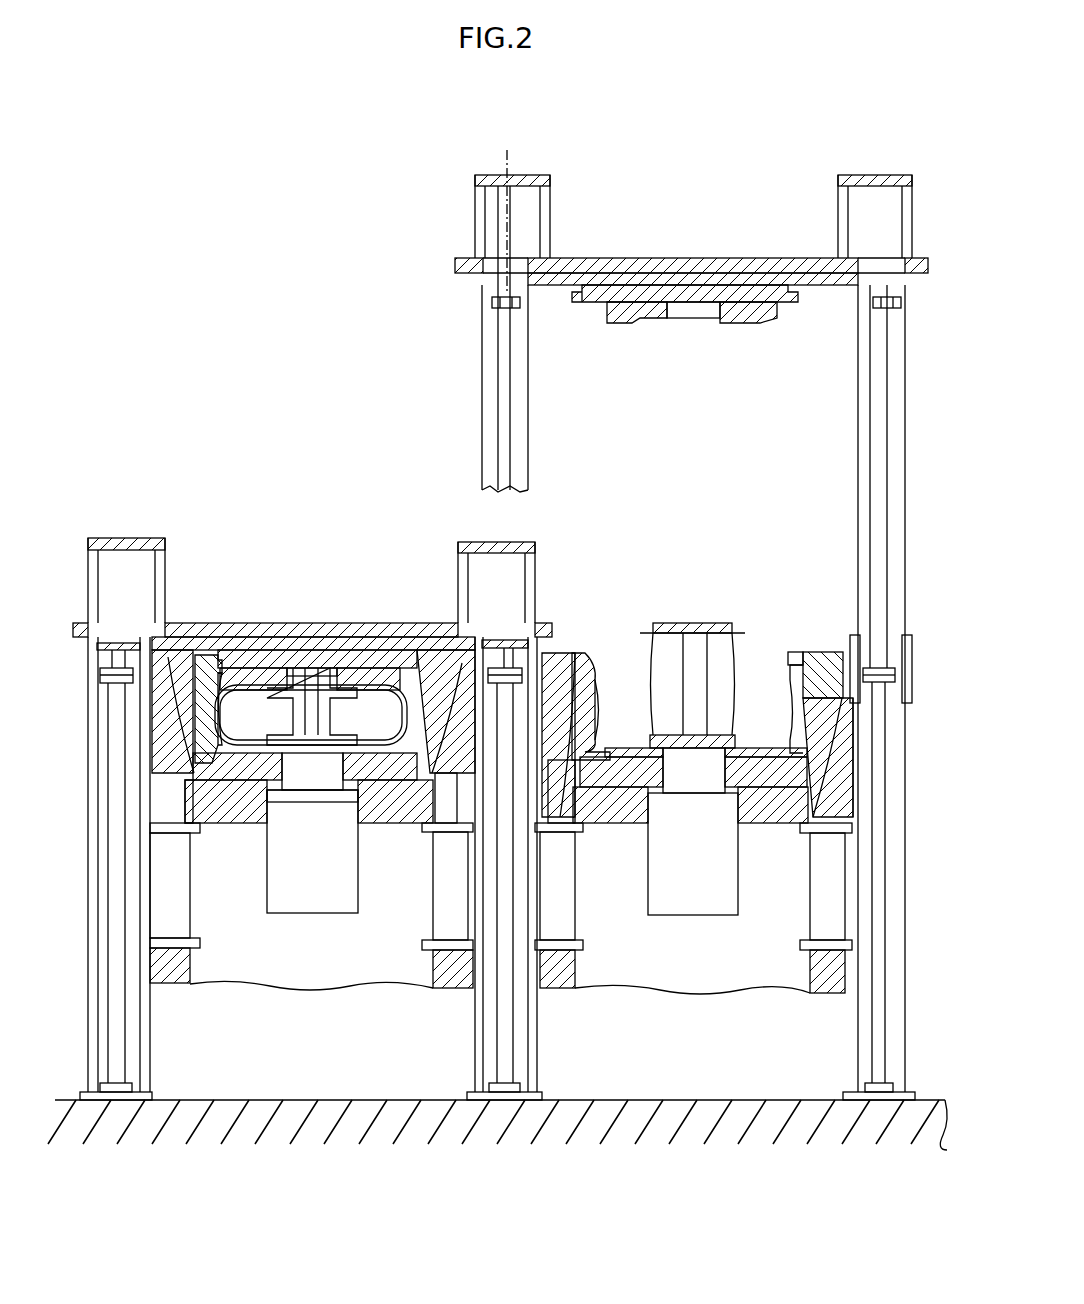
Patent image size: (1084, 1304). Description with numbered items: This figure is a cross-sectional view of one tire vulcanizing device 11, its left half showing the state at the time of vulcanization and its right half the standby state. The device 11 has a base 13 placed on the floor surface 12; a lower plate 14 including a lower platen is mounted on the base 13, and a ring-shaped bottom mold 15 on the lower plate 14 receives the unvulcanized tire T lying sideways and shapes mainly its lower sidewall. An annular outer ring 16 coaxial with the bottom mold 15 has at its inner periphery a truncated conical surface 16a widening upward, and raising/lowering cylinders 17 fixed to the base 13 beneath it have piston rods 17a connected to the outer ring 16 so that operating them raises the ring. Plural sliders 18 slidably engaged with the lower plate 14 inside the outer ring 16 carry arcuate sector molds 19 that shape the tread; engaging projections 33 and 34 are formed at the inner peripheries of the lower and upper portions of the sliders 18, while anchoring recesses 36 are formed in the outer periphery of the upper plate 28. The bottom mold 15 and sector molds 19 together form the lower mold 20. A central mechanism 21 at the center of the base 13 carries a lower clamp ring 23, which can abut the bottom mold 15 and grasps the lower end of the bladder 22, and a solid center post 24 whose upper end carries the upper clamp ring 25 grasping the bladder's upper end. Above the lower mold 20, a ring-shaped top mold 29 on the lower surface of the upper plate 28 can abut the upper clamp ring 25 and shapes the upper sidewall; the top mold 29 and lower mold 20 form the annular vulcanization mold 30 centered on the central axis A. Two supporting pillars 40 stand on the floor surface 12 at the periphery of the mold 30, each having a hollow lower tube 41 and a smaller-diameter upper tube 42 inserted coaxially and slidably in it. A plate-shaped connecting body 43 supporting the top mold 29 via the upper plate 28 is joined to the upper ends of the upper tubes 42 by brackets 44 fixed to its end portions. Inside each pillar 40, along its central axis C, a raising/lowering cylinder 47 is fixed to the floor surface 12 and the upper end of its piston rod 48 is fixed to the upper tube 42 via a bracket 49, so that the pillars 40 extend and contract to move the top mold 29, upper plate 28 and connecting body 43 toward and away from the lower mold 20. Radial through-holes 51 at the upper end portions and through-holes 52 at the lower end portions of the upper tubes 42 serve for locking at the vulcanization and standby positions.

The tire vulcanizing device 11 is at (426, 298).
The floor surface 12 is at (638, 1100).
The base 13 is at (370, 816).
The lower plate 14 is at (255, 770).
The bottom mold 15 is at (310, 750).
The outer ring 16 is at (157, 760).
The truncated conical surface 16a is at (845, 735).
The raising/lowering cylinder 17 is at (168, 893).
The piston rod 17a is at (440, 830).
The slider 18 is at (200, 655).
The sector mold 19 is at (238, 660).
The lower mold 20 is at (210, 805).
The central mechanism 21 is at (312, 915).
The bladder 22 is at (262, 640).
The lower clamp ring 23 is at (326, 790).
The center post 24 is at (325, 690).
The upper clamp ring 25 is at (362, 668).
The upper plate 28 is at (607, 304).
The top mold 29 is at (770, 322).
The vulcanization mold 30 is at (668, 340).
The engaging projection 33 is at (585, 712).
The engaging projection 34 is at (798, 652).
The anchoring recess 36 is at (790, 300).
The supporting pillar 40 is at (152, 1040).
The lower tube 41 is at (150, 1073).
The upper tube 42 is at (860, 462).
The connecting body 43 is at (688, 262).
The bracket 44 is at (552, 232).
The raising/lowering cylinder 47 is at (118, 1012).
The piston rod 48 is at (872, 400).
The bracket 49 is at (875, 270).
The through-hole 51 is at (492, 302).
The through-hole 52 is at (112, 683).
The central axis A is at (312, 700).
The central axis C is at (512, 176).
The unvulcanized tire T is at (222, 712).